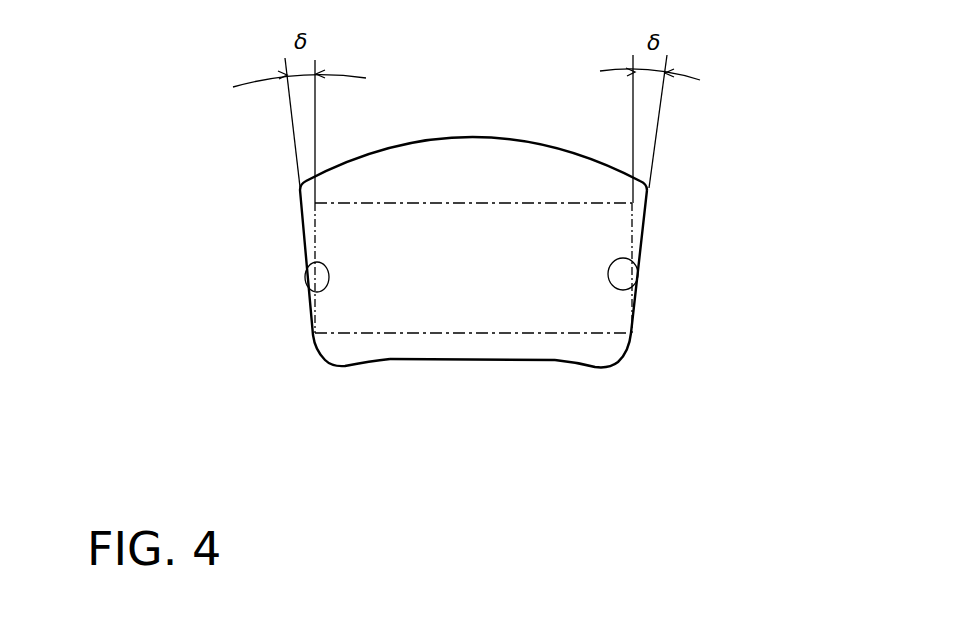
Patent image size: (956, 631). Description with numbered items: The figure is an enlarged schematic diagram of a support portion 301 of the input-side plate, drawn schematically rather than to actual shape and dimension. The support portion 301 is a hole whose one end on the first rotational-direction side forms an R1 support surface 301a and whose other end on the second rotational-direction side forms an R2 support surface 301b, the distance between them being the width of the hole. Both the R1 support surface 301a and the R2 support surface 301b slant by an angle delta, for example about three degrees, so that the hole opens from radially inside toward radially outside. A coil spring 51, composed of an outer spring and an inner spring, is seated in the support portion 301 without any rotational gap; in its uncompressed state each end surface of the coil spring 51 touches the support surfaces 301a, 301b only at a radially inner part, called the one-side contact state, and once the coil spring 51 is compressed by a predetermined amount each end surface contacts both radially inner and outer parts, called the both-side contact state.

The support portion 301 is at (442, 140).
The R1 support surface 301a is at (318, 291).
The R2 support surface 301b is at (622, 282).
The coil spring 51 is at (557, 360).